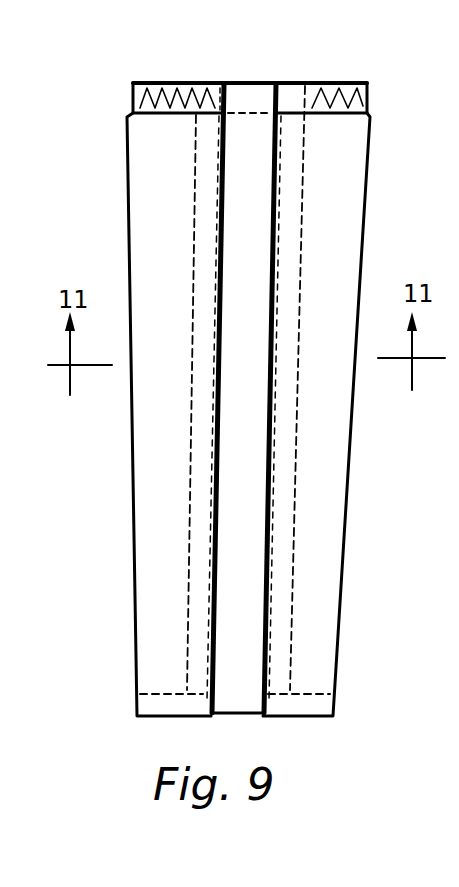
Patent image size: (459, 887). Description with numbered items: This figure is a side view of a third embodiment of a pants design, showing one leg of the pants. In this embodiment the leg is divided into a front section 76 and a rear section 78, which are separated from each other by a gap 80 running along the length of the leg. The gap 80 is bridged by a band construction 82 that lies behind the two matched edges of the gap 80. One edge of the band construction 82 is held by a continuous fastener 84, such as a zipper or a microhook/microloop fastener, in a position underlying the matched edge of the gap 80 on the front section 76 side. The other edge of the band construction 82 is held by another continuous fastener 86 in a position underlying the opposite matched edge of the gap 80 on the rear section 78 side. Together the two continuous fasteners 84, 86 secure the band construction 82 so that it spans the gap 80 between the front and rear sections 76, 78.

The front section 76 is at (160, 447).
The rear section 78 is at (328, 546).
The gap 80 is at (268, 367).
The band construction 82 is at (255, 122).
The continuous fastener 84 is at (217, 212).
The continuous fastener 86 is at (293, 223).